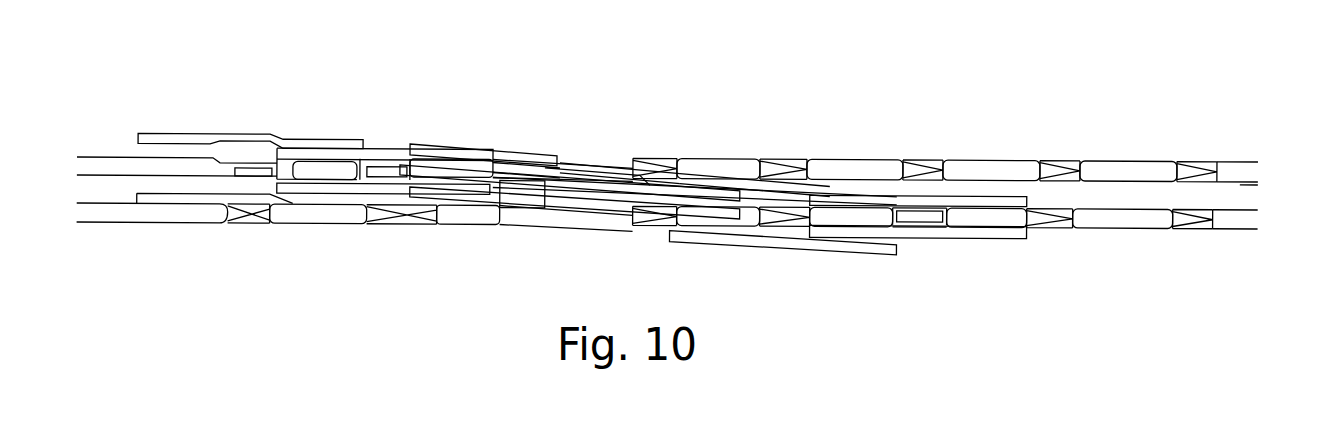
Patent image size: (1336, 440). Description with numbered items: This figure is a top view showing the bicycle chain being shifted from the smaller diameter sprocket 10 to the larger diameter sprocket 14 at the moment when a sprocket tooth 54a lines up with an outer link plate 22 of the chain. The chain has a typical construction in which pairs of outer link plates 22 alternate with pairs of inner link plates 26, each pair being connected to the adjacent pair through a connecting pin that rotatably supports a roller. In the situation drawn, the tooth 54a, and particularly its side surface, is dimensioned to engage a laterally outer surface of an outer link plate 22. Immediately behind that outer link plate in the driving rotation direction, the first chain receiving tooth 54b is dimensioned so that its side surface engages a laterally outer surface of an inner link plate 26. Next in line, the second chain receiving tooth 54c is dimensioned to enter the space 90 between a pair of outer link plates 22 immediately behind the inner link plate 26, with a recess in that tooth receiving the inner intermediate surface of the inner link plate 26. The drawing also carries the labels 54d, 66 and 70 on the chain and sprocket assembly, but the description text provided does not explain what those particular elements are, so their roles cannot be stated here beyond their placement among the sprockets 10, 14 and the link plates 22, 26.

The smaller diameter sprocket 10 is at (1262, 217).
The larger diameter sprocket 14 is at (696, 148).
The outer link plate 22 is at (458, 150).
The inner link plate 26 is at (650, 182).
The tooth 54a is at (780, 165).
The first chain receiving tooth 54b is at (668, 162).
The second chain receiving tooth 54c is at (522, 150).
The link 54d is at (387, 160).
The gap between tubes 66 is at (1258, 182).
The flexible joint 70 is at (1232, 162).
The space 90 is at (516, 193).